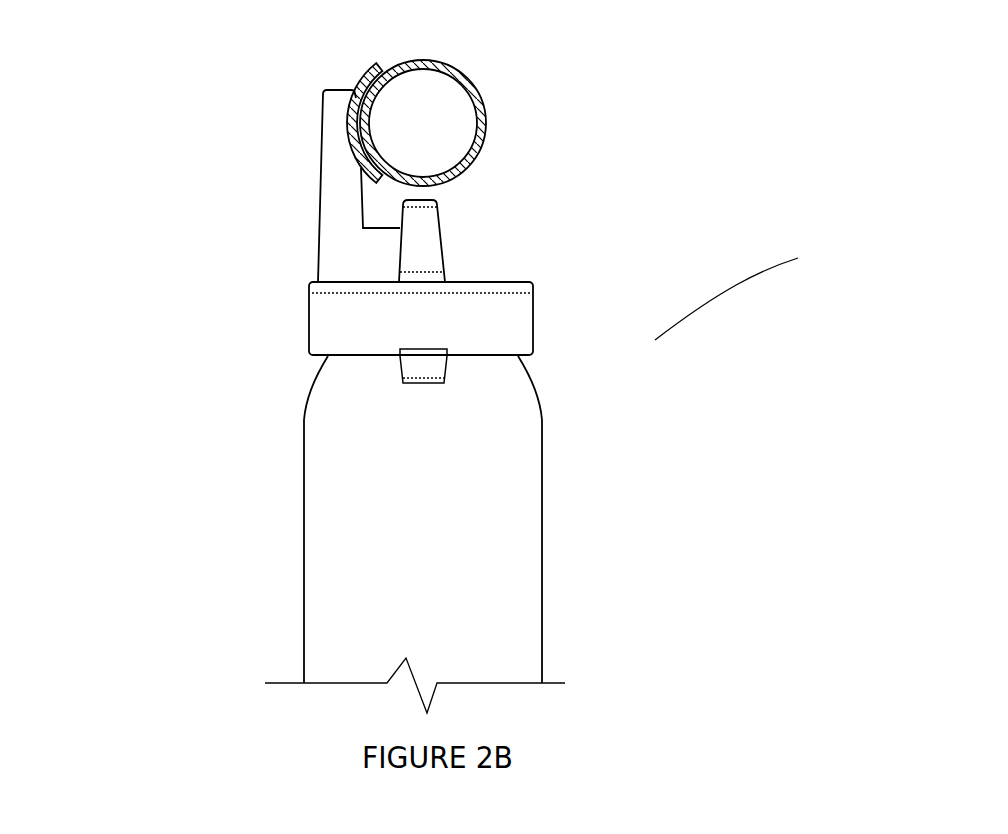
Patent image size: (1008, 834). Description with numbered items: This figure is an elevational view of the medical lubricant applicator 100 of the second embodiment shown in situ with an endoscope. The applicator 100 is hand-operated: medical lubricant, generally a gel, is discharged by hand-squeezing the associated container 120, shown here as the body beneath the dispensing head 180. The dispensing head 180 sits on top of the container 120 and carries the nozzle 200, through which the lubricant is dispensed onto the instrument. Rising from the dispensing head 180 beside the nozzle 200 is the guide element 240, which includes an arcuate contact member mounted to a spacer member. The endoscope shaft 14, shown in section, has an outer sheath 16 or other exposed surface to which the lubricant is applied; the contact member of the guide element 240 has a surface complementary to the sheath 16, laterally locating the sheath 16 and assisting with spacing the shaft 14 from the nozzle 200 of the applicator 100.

The shaft 14 is at (461, 61).
The outer sheath 16 is at (488, 117).
The medical lubricant applicator 100 is at (672, 330).
The container 120 is at (357, 498).
The dispensing head 180 is at (303, 279).
The nozzle 200 is at (420, 243).
The guide element 240 is at (321, 187).